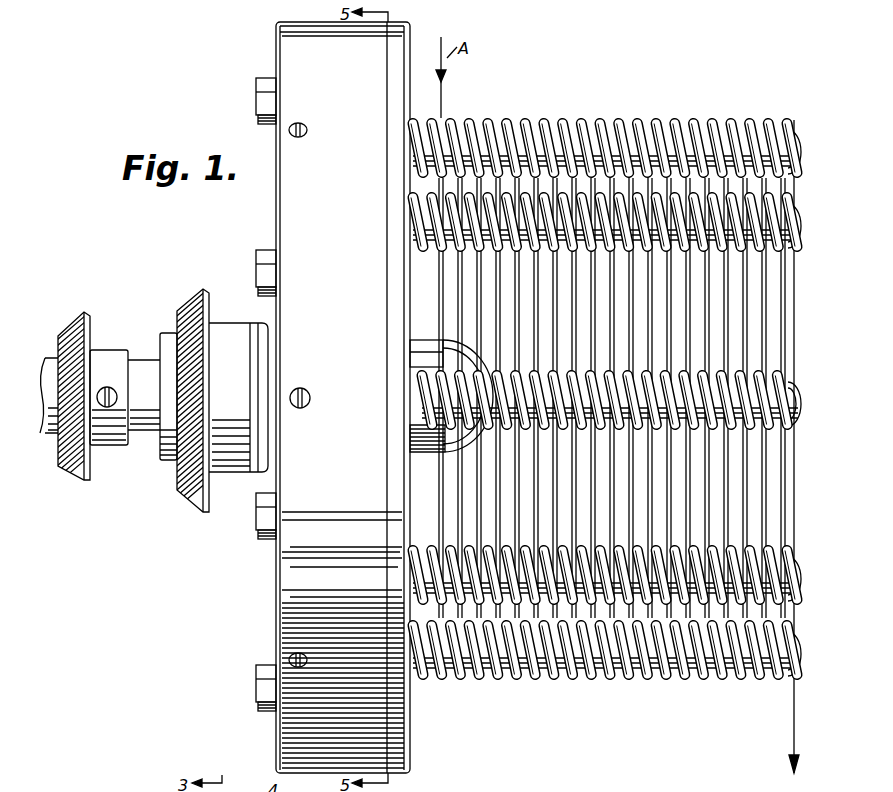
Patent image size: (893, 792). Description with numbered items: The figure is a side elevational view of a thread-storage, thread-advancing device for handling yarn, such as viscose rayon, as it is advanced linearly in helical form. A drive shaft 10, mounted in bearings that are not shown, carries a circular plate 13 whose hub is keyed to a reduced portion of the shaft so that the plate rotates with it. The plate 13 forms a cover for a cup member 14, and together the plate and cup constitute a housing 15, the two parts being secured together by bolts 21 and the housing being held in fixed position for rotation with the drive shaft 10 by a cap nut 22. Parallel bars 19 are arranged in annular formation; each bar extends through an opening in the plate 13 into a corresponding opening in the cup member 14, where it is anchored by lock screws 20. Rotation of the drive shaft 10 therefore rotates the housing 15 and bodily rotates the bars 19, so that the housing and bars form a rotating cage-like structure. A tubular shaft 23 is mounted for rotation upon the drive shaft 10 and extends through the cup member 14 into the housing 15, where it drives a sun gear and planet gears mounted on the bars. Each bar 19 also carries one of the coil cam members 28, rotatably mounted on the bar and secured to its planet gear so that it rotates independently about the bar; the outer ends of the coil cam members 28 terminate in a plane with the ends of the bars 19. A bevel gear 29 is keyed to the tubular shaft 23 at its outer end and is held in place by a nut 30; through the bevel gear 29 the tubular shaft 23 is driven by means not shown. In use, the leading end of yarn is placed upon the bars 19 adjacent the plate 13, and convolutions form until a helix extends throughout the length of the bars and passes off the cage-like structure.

The drive shaft 10 is at (52, 440).
The circular plate 13 is at (413, 752).
The cup member 14 is at (280, 618).
The housing 15 is at (279, 36).
The parallel bars 19 is at (613, 402).
The lock screws 20 is at (307, 404).
The bolts 21 is at (256, 95).
The cap nut 22 is at (438, 452).
The tubular shaft 23 is at (250, 342).
The coil cam members 28 is at (412, 214).
The bevel gear 29 is at (200, 505).
The nut 30 is at (160, 462).